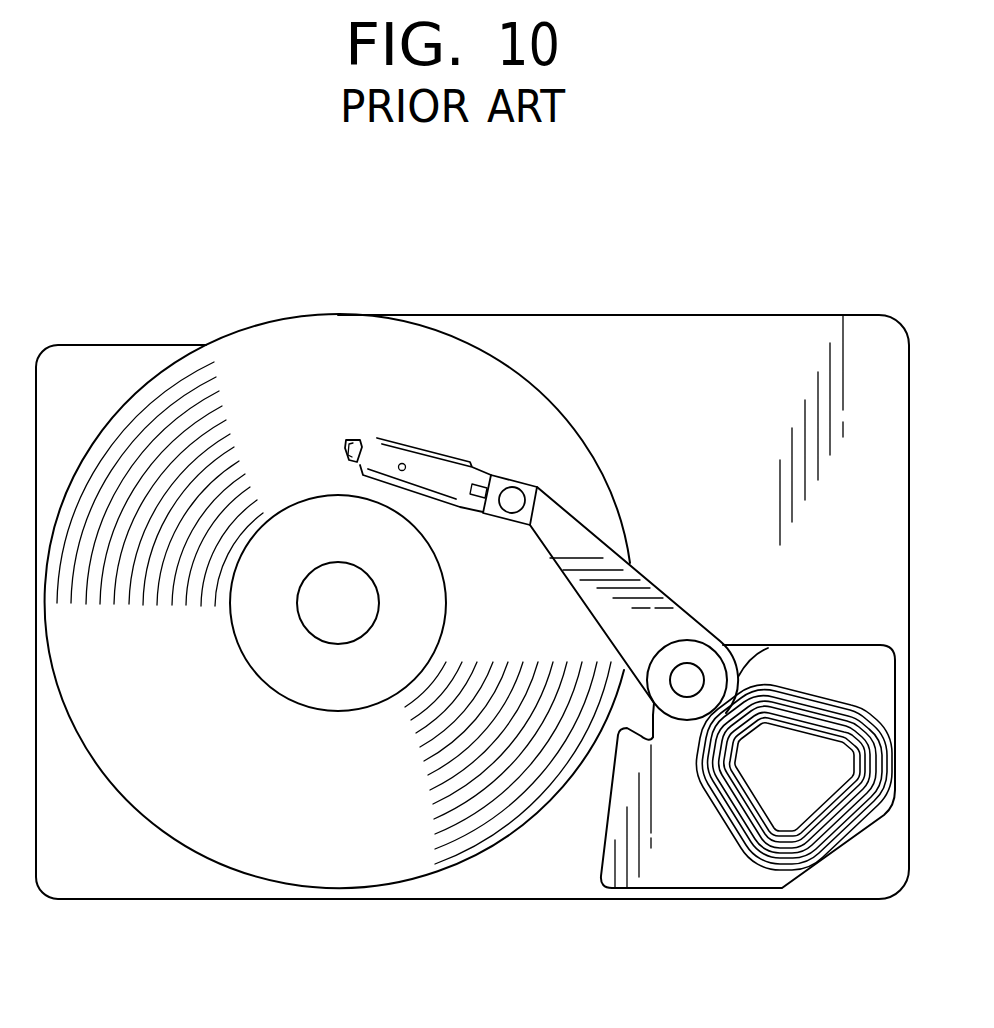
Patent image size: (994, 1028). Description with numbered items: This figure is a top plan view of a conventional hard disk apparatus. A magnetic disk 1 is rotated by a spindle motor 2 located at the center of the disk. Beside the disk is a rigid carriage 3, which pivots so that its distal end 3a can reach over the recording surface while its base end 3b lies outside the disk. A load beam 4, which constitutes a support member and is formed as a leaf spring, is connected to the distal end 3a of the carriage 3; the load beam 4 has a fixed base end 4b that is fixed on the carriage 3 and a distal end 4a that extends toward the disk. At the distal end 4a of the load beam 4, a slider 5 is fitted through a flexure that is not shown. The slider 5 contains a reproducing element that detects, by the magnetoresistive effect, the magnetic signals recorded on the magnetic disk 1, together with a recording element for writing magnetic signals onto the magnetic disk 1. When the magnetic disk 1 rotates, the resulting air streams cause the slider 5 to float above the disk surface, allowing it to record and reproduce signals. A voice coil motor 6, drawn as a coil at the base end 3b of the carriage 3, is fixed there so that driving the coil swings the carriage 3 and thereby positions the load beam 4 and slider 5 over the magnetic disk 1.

The magnetic disk 1 is at (278, 410).
The spindle motor 2 is at (333, 613).
The carriage 3 is at (663, 590).
The distal end of the carriage 3a is at (539, 497).
The base end of the carriage 3b is at (765, 645).
The load beam 4 is at (449, 462).
The distal end of the load beam 4a is at (373, 438).
The fixed base end of the load beam 4b is at (521, 482).
The slider 5 is at (347, 439).
The voice coil motor 6 is at (677, 855).